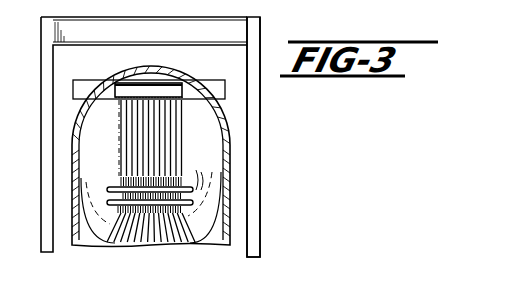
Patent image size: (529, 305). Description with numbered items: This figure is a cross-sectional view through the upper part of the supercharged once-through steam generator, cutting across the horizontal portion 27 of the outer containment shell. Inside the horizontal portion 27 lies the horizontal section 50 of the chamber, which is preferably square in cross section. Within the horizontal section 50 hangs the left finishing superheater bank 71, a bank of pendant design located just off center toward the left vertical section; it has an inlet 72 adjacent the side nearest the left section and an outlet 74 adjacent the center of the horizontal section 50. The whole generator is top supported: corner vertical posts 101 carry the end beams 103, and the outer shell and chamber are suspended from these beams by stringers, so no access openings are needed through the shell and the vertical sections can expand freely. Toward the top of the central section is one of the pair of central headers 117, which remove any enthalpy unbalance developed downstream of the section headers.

The end beams 103 is at (85, 28).
The corner vertical posts 101 is at (262, 162).
The horizontal portion 27 is at (184, 72).
The outlet 74 is at (73, 80).
The inlet 72 is at (138, 97).
The left finishing superheater bank 71 is at (128, 147).
The horizontal section 50 is at (182, 152).
The central headers 117 is at (161, 196).